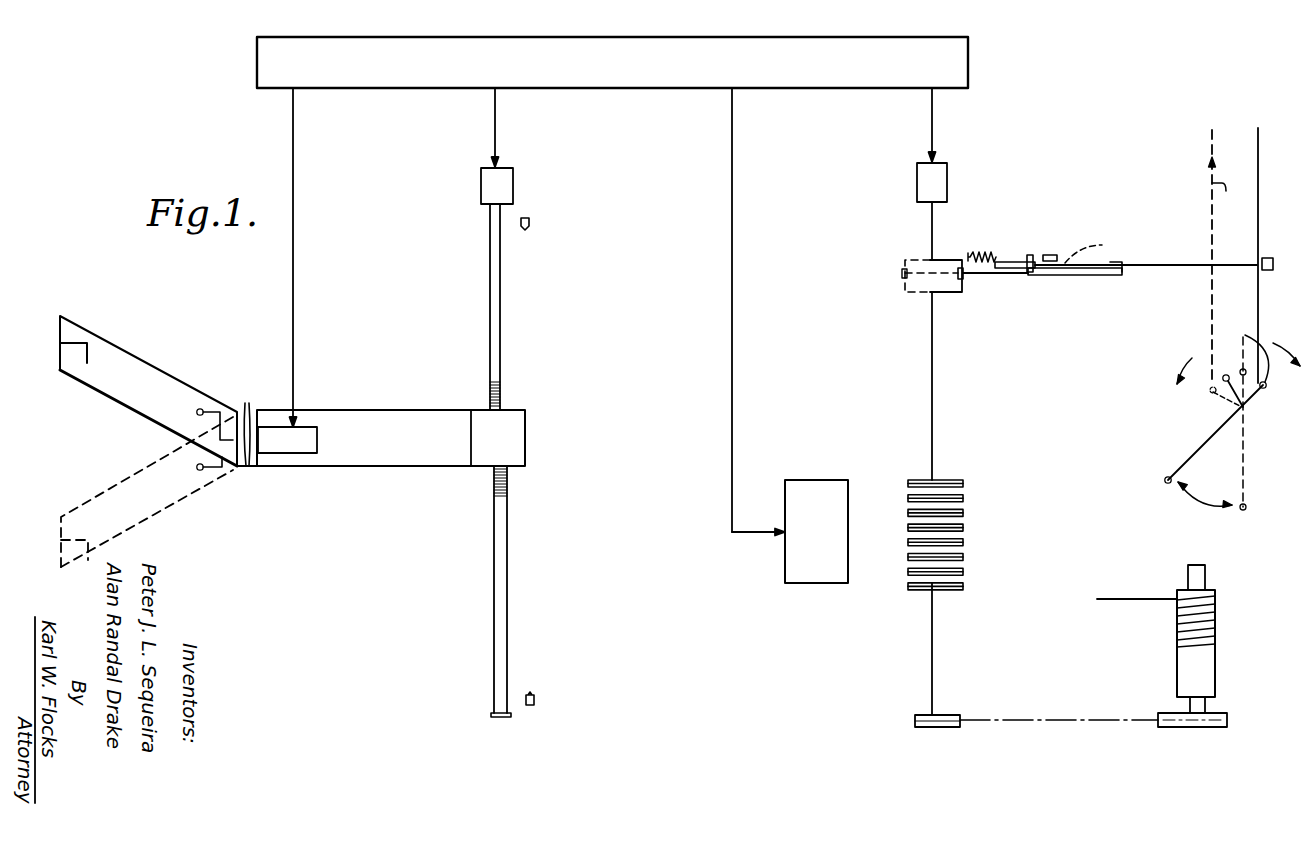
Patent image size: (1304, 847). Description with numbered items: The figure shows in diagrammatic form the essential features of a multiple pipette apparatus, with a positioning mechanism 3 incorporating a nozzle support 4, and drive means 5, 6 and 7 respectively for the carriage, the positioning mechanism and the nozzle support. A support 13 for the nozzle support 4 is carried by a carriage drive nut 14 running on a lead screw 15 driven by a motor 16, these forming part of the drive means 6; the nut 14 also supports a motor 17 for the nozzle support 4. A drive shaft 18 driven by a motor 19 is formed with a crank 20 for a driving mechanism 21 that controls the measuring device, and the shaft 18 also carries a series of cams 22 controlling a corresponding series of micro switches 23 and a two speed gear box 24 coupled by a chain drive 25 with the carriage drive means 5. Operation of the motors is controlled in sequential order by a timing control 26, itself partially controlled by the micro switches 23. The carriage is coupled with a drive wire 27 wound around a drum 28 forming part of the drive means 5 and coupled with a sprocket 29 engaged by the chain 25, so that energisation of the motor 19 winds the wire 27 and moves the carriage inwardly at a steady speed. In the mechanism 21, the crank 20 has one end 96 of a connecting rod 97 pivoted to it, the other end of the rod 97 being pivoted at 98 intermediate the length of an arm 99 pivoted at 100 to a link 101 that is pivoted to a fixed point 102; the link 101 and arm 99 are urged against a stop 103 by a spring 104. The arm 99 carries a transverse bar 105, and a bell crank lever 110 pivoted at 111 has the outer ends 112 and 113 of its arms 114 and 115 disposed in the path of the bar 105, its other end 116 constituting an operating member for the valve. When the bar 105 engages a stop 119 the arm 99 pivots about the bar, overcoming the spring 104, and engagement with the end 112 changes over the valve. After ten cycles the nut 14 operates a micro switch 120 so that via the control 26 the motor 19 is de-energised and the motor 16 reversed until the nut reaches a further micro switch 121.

The timing control 26 is at (619, 79).
The motor 16 is at (488, 187).
The micro switch 121 is at (529, 219).
The drive means 6 is at (490, 460).
The lead screw 15 is at (496, 327).
The micro switch 120 is at (535, 698).
The drive means 7 is at (381, 417).
The positioning mechanism 3 is at (382, 402).
The carriage drive nut 14 is at (433, 417).
The motor 17 is at (300, 444).
The support 13 is at (253, 420).
The nozzle support 4 is at (152, 351).
The micro switches 23 is at (829, 550).
The motor 19 is at (947, 183).
The drive shaft 18 is at (932, 638).
The crank 20 is at (950, 294).
The end of connecting rod 96 is at (963, 281).
The connecting rod 97 is at (1010, 276).
The driving mechanism 21 is at (1107, 247).
The spring 104 is at (995, 252).
The pivot 100 is at (1005, 262).
The link 101 is at (1032, 256).
The fixed point 102 is at (1055, 256).
The stop 103 is at (1033, 276).
The pivot 98 is at (1100, 245).
The arm 99 is at (1170, 263).
The bar 105 is at (1257, 202).
The stop 119 is at (1272, 258).
The pivot 111 is at (1248, 412).
The bell crank lever 110 is at (1195, 452).
The end of bell crank lever arm 116 is at (1165, 480).
The arm 114 is at (1255, 400).
The outer end 113 is at (1209, 390).
The arm 115 is at (1233, 415).
The outer end 112 is at (1241, 346).
The cams 22 is at (966, 476).
The two speed gear box 24 is at (922, 714).
The chain drive 25 is at (1024, 718).
The drive means 5 is at (1170, 646).
The drum 28 is at (1216, 645).
The sprocket 29 is at (1166, 712).
The drive wire 27 is at (1147, 599).